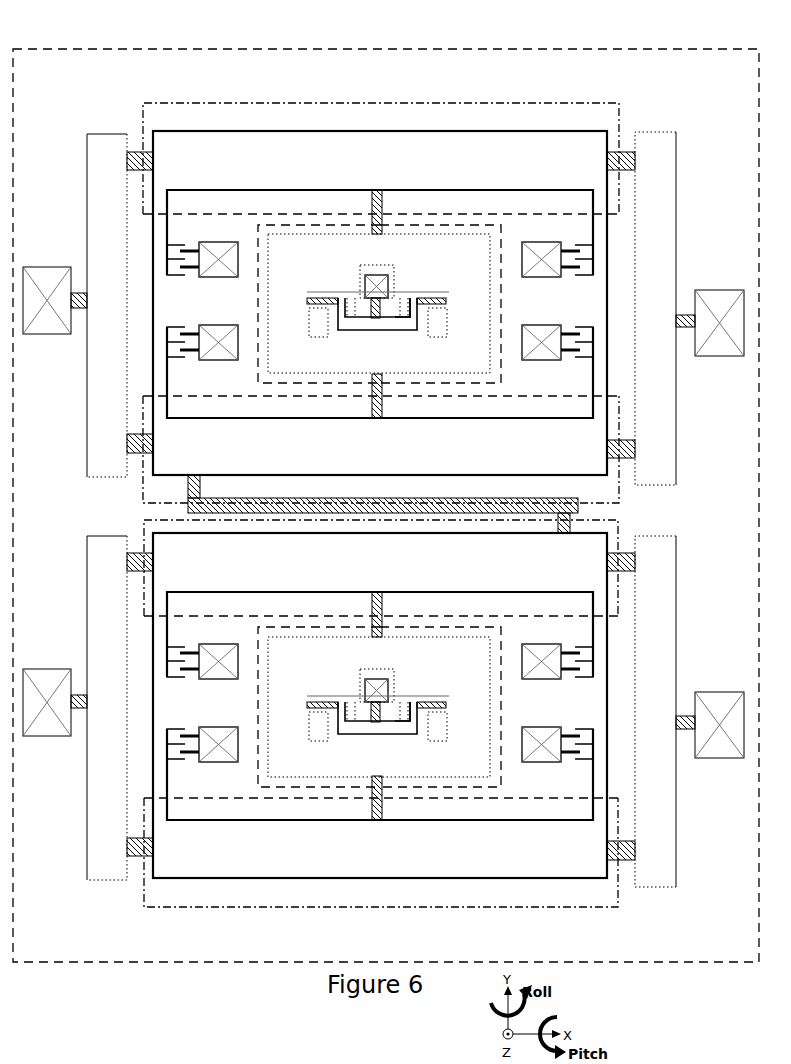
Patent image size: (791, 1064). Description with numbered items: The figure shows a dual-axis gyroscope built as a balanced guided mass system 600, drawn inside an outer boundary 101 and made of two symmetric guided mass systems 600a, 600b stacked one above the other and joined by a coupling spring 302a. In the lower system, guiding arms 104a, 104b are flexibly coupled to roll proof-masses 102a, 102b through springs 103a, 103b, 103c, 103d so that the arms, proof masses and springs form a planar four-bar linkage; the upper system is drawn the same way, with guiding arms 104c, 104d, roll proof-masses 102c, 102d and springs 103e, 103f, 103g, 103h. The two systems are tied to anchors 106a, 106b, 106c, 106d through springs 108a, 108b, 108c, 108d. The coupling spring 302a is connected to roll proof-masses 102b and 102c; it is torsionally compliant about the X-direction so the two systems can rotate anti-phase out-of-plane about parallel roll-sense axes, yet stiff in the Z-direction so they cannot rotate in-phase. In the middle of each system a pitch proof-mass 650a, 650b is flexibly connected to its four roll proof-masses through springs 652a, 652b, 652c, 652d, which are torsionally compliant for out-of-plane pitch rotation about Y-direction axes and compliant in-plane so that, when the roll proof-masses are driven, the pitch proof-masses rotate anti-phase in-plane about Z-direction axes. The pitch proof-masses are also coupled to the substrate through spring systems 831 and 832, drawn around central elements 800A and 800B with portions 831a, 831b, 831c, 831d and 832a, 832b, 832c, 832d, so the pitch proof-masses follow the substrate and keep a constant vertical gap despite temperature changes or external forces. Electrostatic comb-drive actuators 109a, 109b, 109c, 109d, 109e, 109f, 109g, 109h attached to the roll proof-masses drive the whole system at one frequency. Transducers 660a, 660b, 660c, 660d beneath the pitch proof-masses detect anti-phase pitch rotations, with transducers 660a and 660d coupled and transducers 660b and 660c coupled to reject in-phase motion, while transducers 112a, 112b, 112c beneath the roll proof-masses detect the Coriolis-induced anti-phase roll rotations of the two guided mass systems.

The device housing 101 is at (749, 47).
The roll proof-mass 102a is at (457, 878).
The roll proof-mass 102b is at (168, 533).
The roll proof-mass 102c is at (502, 475).
The roll proof-mass 102d is at (485, 131).
The spring 103a is at (138, 858).
The spring 103b is at (612, 861).
The spring 103c is at (142, 560).
The spring 103d is at (623, 553).
The flexure 103e is at (140, 455).
The flexure 103f is at (620, 460).
The flexure 103g is at (144, 153).
The flexure 103h is at (622, 152).
The guiding arm 104a is at (85, 805).
The guiding arm 104b is at (677, 858).
The side frame member 104c is at (87, 182).
The side frame member 104d is at (677, 178).
The anchor 106a is at (56, 740).
The anchor 106b is at (718, 759).
The anchor 106c is at (60, 335).
The anchor 106d is at (720, 358).
The spring 108a is at (84, 697).
The spring 108b is at (682, 713).
The spring 108c is at (79, 292).
The spring 108d is at (680, 313).
The electrostatic actuator 109a is at (220, 719).
The electrostatic actuator 109b is at (547, 728).
The electrostatic actuator 109c is at (208, 679).
The electrostatic actuator 109d is at (555, 679).
The electrostatic actuator 109e is at (211, 327).
The electrostatic actuator 109f is at (571, 318).
The electrostatic actuator 109g is at (235, 279).
The electrostatic actuator 109h is at (555, 278).
The transducer 112a is at (443, 908).
The transducer 112b is at (146, 520).
The transducer 112c is at (455, 101).
The coupling spring 302a is at (572, 512).
The balanced guided mass system 600 is at (389, 947).
The symmetric guided mass system 600a is at (685, 612).
The symmetric guided mass system 600b is at (685, 222).
The pitch proof-mass 650a is at (337, 261).
The pitch proof-mass 650b is at (337, 665).
The spring 652a is at (384, 397).
The spring 652b is at (383, 213).
The spring 652c is at (384, 799).
The spring 652d is at (383, 632).
The transducer 660a is at (258, 234).
The transducer 660b is at (502, 235).
The transducer 660c is at (258, 637).
The transducer 660d is at (502, 637).
The sensor 800A is at (387, 283).
The sensor 800B is at (397, 684).
The spring system 831 is at (383, 328).
The bracket mount 831a is at (327, 305).
The bracket mount 831b is at (430, 306).
The bracket hinge 831c is at (373, 305).
The bracket arm 831d is at (393, 323).
The spring system 832 is at (377, 733).
The bracket mount 832a is at (307, 725).
The bracket mount 832b is at (450, 725).
The bracket hinge 832c is at (348, 733).
The bracket arm 832d is at (422, 733).